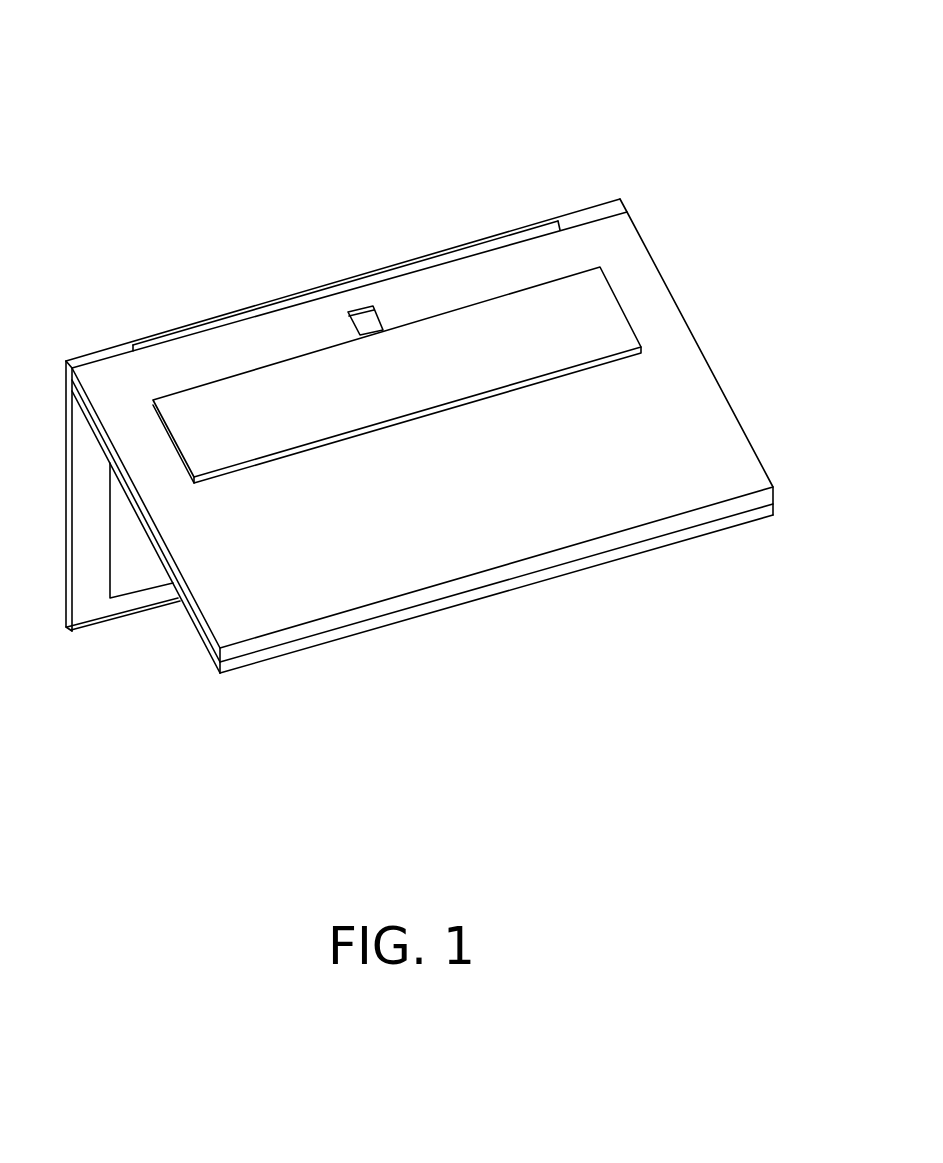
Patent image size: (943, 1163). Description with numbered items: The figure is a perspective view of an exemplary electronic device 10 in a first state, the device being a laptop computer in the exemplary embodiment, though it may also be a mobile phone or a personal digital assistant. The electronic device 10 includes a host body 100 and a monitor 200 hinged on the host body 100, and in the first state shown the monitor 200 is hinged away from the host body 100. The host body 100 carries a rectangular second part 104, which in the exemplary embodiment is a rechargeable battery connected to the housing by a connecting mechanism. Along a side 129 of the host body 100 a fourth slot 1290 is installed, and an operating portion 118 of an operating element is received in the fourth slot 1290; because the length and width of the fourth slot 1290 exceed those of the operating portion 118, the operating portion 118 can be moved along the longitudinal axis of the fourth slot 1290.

The electronic device 10 is at (140, 72).
The host body 100 is at (638, 416).
The second part 104 is at (587, 320).
The operating portion 118 is at (366, 318).
The side 129 is at (505, 243).
The fourth slot 1290 is at (350, 312).
The monitor 200 is at (92, 585).